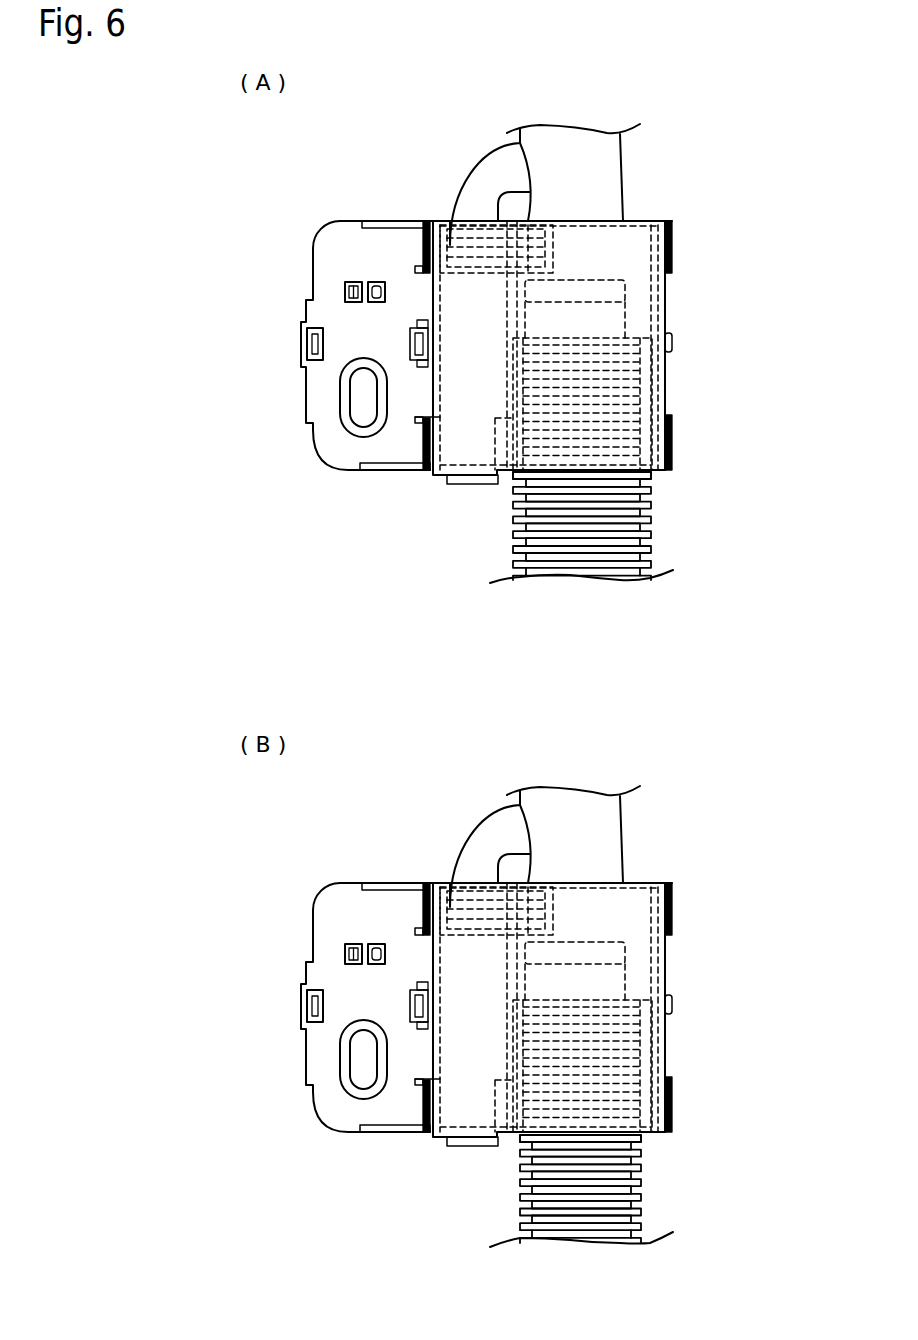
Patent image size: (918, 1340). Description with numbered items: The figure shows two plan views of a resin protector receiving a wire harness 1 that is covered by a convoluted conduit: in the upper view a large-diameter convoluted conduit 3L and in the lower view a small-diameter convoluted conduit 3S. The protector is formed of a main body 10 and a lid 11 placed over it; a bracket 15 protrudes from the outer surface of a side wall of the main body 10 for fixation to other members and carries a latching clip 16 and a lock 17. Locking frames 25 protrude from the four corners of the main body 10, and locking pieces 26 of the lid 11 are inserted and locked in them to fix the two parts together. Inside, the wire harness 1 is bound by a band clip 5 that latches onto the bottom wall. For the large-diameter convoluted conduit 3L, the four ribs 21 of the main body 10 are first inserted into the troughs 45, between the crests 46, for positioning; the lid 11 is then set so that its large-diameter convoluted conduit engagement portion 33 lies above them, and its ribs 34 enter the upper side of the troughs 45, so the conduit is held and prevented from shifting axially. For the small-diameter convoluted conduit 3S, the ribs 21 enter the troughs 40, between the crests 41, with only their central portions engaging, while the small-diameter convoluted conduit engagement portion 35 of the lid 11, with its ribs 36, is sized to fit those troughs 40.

The wire harness 1 is at (625, 177).
The large-diameter convoluted conduit 3L is at (586, 554).
The small-diameter convoluted conduit 3S is at (576, 1191).
The band clip 5 is at (663, 290).
The main body 10 is at (663, 313).
The lid 11 is at (616, 683).
The bracket 15 is at (336, 440).
The latching clip 16 is at (340, 292).
The lock 17 is at (302, 346).
The ribs 21 is at (582, 1066).
The locking frames 25 is at (571, 656).
The locking pieces 26 is at (668, 578).
The large-diameter convoluted conduit engagement portion 33 is at (584, 429).
The ribs 34 is at (575, 763).
The small-diameter convoluted conduit engagement portion 35 is at (466, 231).
The ribs 36 is at (457, 238).
The troughs 40 is at (530, 1158).
The crests 41 is at (528, 1178).
The troughs 45 is at (520, 512).
The crests 46 is at (522, 519).